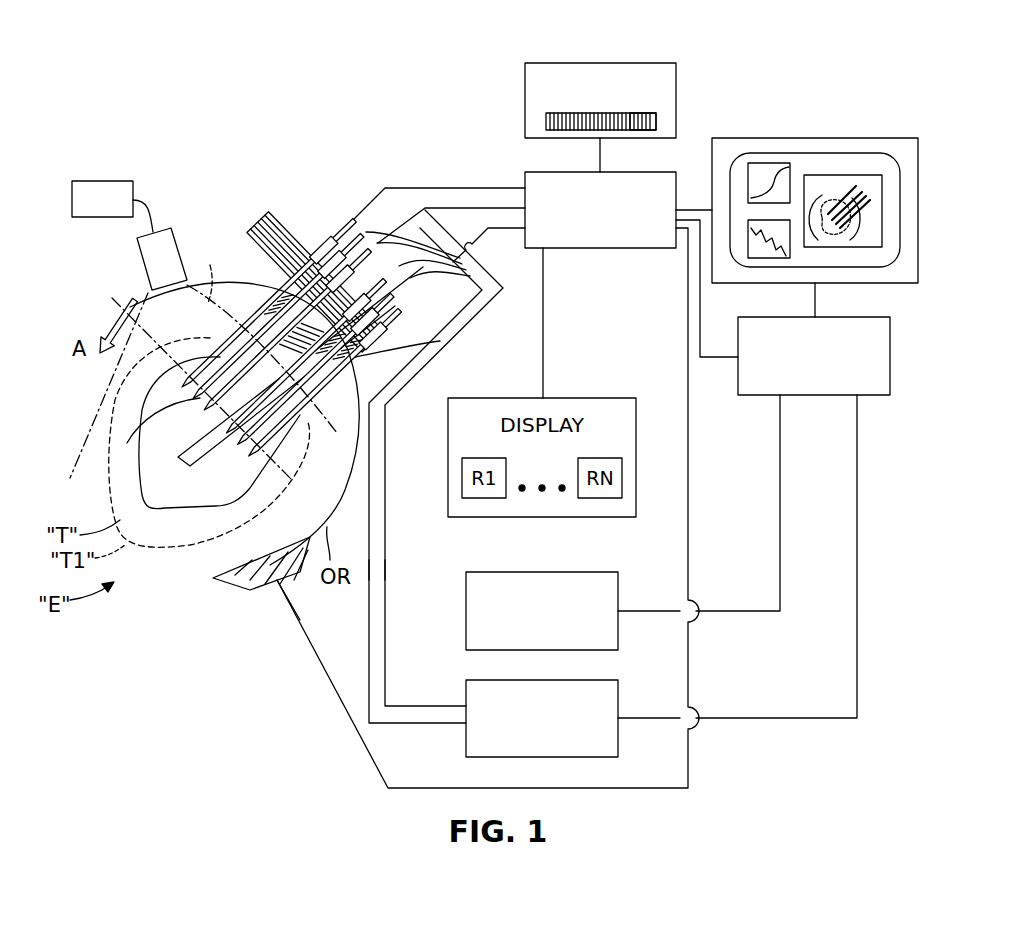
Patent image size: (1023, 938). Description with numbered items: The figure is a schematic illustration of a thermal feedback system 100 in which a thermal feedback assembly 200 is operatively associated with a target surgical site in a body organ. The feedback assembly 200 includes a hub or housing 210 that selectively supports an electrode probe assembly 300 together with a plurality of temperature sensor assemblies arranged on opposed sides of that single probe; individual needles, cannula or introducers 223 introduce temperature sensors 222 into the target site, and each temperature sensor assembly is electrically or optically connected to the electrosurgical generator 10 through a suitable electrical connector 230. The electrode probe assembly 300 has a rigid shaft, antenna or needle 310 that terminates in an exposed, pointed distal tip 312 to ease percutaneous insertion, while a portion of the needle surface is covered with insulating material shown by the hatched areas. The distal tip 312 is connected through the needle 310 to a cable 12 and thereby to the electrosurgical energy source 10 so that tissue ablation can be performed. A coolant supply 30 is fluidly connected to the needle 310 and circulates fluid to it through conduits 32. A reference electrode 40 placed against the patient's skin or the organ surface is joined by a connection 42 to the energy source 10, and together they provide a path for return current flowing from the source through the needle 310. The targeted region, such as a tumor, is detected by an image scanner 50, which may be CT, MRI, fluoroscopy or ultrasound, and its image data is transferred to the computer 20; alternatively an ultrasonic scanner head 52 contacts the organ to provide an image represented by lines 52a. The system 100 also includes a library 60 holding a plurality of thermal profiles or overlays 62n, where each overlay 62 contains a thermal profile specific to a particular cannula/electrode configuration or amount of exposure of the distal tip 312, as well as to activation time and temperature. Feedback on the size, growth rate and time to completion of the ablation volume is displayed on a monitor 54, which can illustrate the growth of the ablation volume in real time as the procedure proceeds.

The thermal feedback system 100 is at (330, 128).
The electrosurgical generator 10 is at (603, 249).
The cable 12 is at (503, 208).
The computer 20 is at (890, 358).
The coolant supply 30 is at (604, 680).
The conduits 32 is at (370, 568).
The reference electrode 40 is at (250, 588).
The connection 42 is at (335, 688).
The image scanner 50 is at (604, 572).
The ultrasonic scanner head 52 is at (137, 266).
The image lines 52a is at (220, 273).
The monitor 54 is at (918, 242).
The library 60 is at (640, 63).
The overlay 62 is at (546, 120).
The plurality of thermal profiles/overlays 62n is at (656, 120).
The thermal feedback assembly 200 is at (318, 216).
The hub or housing 210 is at (255, 230).
The temperature sensors 222 is at (95, 443).
The introducers 223 is at (440, 341).
The electrical connector 230 is at (412, 188).
The electrode probe assembly 300 is at (369, 448).
The needle 310 is at (385, 418).
The distal tip 312 is at (172, 462).